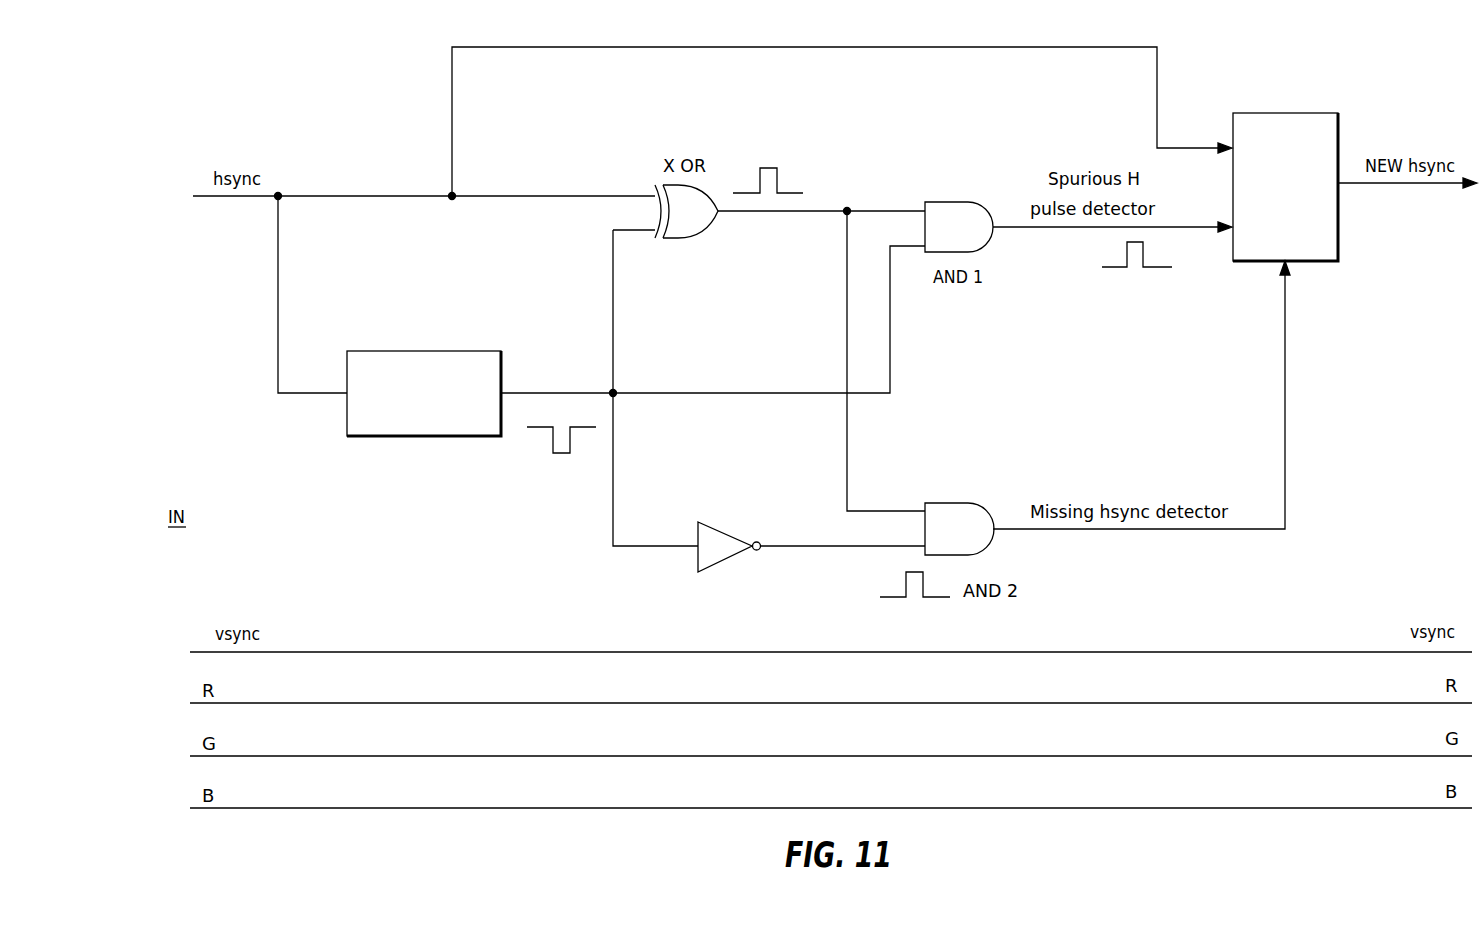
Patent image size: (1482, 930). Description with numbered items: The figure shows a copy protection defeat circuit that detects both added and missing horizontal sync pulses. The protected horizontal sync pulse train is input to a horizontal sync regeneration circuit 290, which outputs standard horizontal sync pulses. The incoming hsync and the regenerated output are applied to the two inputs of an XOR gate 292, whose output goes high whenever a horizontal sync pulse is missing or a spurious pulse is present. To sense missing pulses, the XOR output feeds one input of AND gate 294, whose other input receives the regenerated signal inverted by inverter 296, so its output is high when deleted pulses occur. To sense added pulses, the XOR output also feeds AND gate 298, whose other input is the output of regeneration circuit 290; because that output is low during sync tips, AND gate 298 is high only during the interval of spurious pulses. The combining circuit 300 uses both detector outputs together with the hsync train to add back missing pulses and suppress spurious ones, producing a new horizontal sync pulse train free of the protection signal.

The horizontal sync regeneration circuit 290 is at (470, 350).
The XOR gate 292 is at (693, 239).
The AND gate 294 is at (948, 502).
The inverter 296 is at (718, 522).
The AND gate 298 is at (973, 201).
The combining circuit 300 is at (1320, 262).